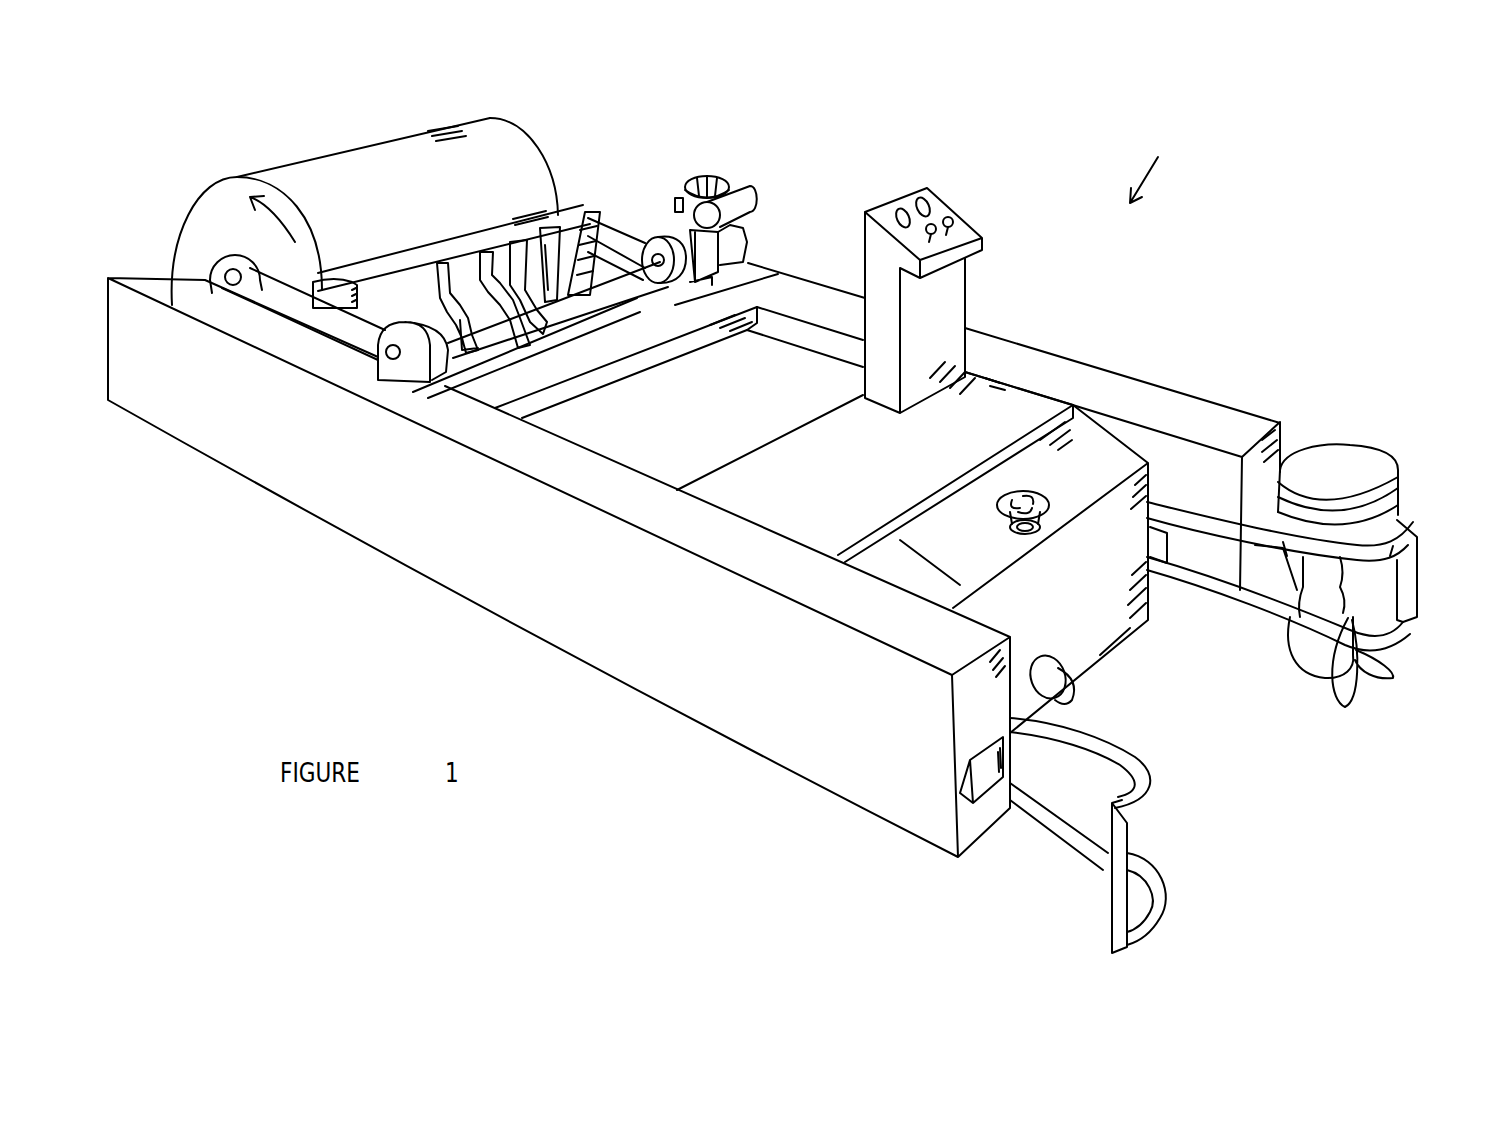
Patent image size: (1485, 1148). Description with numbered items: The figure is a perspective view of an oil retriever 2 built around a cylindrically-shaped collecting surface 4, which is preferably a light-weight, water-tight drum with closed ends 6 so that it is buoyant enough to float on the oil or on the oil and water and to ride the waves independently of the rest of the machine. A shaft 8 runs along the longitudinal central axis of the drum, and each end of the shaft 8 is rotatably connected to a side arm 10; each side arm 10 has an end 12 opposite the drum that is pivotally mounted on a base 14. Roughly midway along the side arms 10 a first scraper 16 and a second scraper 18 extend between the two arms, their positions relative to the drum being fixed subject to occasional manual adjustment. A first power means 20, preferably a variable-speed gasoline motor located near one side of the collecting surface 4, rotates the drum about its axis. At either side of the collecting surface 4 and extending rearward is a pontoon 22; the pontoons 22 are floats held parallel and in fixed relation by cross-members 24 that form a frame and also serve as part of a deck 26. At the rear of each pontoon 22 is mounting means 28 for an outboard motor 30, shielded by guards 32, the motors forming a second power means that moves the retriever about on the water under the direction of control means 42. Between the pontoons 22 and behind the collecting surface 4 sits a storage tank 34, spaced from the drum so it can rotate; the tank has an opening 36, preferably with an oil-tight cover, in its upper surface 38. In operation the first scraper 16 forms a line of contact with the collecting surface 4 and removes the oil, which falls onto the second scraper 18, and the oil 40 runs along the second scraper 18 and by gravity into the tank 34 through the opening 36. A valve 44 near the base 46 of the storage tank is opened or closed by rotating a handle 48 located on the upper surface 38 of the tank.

The oil retriever 2 is at (1152, 164).
The cylindrically-shaped collecting surface 4 is at (378, 155).
The closed ends 6 is at (505, 118).
The shaft 8 is at (225, 270).
The side arm 10 is at (618, 247).
The end 12 is at (667, 240).
The base 14 is at (737, 265).
The first scraper 16 is at (418, 260).
The second scraper 18 is at (385, 303).
The first power means 20 is at (703, 177).
The pontoon 22 is at (1252, 422).
The cross-members 24 is at (858, 518).
The deck 26 is at (1035, 367).
The mounting means 28 is at (990, 800).
The outboard motor 30 is at (1358, 450).
The guards 32 is at (1140, 797).
The storage tank 34 is at (1108, 463).
The opening 36 is at (607, 310).
The upper surface 38 is at (923, 570).
The oil 40 is at (488, 252).
The control means 42 is at (958, 227).
The valve 44 is at (1073, 697).
The base 46 is at (1113, 652).
The handle 48 is at (1040, 500).